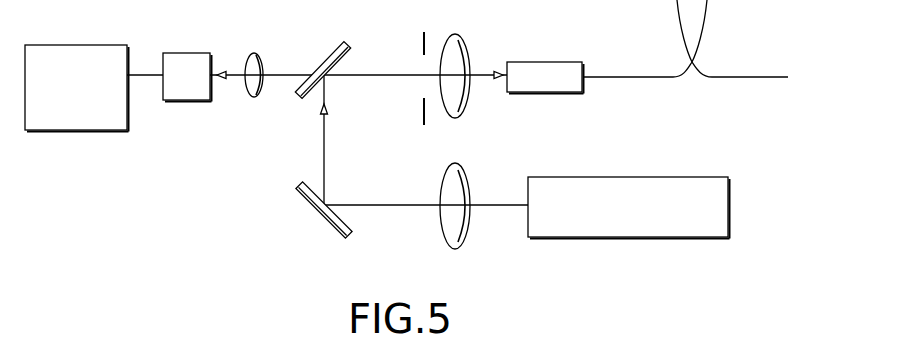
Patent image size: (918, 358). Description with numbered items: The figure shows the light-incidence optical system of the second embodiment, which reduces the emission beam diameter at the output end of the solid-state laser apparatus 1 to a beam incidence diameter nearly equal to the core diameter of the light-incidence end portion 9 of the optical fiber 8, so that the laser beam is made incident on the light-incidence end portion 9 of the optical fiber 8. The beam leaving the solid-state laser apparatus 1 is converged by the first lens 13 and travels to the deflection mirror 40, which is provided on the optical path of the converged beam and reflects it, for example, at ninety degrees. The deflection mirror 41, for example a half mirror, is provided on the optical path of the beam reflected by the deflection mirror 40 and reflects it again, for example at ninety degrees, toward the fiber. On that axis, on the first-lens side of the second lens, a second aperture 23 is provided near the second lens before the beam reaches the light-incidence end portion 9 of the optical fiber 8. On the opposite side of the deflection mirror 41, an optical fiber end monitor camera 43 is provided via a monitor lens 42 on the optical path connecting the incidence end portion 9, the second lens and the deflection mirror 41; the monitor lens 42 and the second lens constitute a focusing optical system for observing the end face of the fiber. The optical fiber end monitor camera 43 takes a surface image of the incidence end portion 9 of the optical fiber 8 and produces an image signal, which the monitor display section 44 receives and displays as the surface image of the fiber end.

The solid-state laser apparatus 1 is at (686, 177).
The optical fiber 8 is at (633, 76).
The light-incidence end portion 9 is at (550, 62).
The first lens 13 is at (441, 225).
The second aperture 23 is at (422, 103).
The deflection mirror 40 is at (298, 196).
The deflection mirror 41 is at (298, 100).
The monitor lens 42 is at (262, 58).
The optical fiber end monitor camera 43 is at (186, 53).
The monitor display section 44 is at (96, 45).